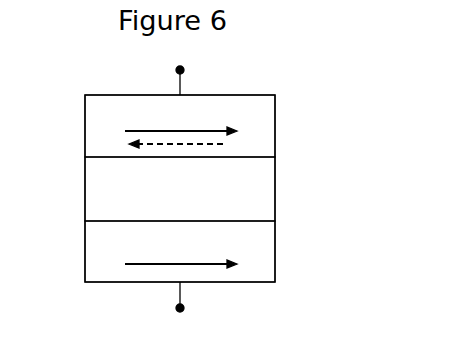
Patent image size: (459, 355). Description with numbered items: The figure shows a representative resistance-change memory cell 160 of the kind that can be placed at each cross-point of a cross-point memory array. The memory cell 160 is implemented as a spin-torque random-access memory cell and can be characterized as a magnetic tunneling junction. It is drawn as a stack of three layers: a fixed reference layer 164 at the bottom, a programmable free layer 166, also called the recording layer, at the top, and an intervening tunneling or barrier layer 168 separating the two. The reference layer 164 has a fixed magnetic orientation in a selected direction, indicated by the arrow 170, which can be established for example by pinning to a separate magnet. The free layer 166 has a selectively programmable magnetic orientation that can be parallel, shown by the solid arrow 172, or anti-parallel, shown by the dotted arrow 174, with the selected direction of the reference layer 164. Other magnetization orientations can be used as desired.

The resistance-change memory cell 160 is at (248, 79).
The reference layer 164 is at (276, 241).
The free layer 166 is at (275, 108).
The barrier layer 168 is at (276, 183).
The arrow 170 is at (135, 262).
The solid arrow 172 is at (133, 131).
The dotted arrow 174 is at (222, 144).